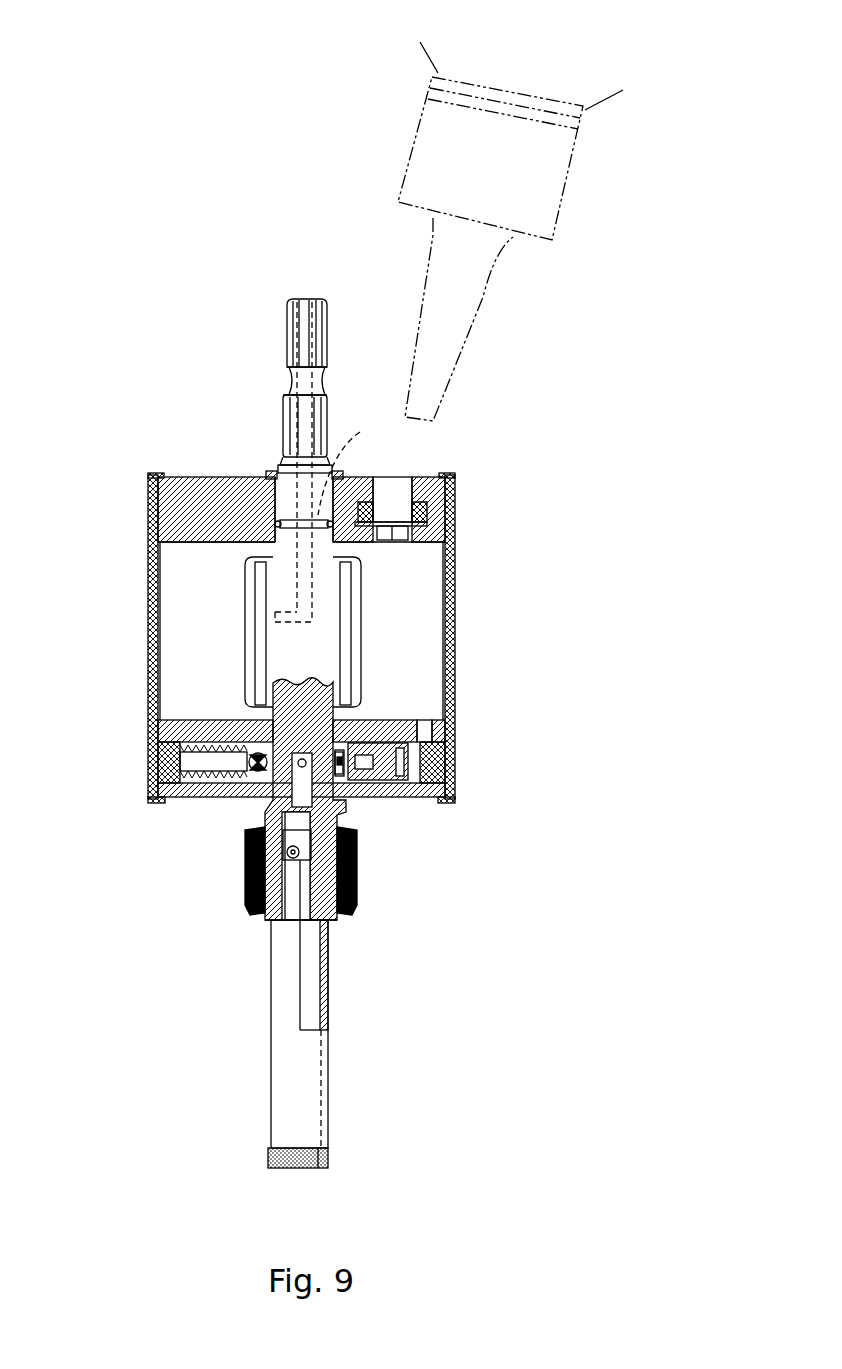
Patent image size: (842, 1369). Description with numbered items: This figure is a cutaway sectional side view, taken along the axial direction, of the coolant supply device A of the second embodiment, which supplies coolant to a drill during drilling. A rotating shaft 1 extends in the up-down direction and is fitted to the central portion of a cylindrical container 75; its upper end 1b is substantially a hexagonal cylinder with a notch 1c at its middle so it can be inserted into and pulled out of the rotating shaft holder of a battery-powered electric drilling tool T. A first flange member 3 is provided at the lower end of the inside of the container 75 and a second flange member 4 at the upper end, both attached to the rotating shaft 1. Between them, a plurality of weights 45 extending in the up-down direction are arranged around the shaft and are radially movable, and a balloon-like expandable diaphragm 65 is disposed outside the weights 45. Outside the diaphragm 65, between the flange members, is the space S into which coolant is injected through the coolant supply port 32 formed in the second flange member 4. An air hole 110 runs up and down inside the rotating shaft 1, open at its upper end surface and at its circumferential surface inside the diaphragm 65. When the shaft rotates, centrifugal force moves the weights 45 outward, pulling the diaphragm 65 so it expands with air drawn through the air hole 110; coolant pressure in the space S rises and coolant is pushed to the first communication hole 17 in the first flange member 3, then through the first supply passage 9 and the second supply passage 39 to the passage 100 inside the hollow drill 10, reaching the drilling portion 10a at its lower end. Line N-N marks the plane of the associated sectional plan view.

The rotating shaft 1 is at (303, 495).
The upper end 1b is at (287, 333).
The notch 1c is at (290, 381).
The second flange member 4 is at (187, 492).
The weights 45 is at (262, 553).
The diaphragm 65 is at (240, 583).
The air hole 110 is at (334, 462).
The coolant supply port 32 is at (415, 495).
The space S is at (405, 597).
The line N- N is at (148, 625).
The cylindrical container 75 is at (455, 660).
The first communication hole 17 is at (420, 726).
The first flange member 3 is at (372, 758).
The coolant supply device A is at (137, 722).
The first supply passage 9 is at (302, 792).
The pin (92) 39 is at (345, 766).
The drill 10 is at (328, 1100).
The passage 100 is at (308, 1000).
The drilling portion 10a is at (282, 1165).
The tool T is at (483, 297).